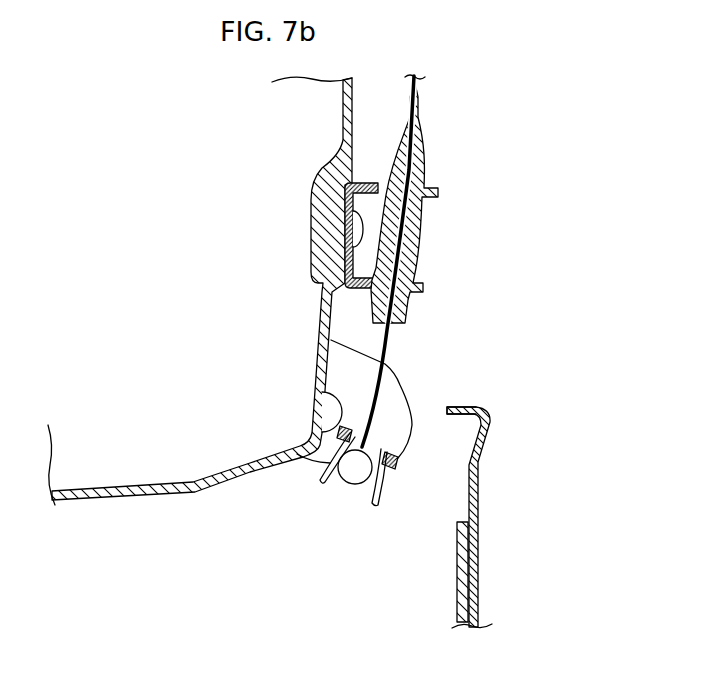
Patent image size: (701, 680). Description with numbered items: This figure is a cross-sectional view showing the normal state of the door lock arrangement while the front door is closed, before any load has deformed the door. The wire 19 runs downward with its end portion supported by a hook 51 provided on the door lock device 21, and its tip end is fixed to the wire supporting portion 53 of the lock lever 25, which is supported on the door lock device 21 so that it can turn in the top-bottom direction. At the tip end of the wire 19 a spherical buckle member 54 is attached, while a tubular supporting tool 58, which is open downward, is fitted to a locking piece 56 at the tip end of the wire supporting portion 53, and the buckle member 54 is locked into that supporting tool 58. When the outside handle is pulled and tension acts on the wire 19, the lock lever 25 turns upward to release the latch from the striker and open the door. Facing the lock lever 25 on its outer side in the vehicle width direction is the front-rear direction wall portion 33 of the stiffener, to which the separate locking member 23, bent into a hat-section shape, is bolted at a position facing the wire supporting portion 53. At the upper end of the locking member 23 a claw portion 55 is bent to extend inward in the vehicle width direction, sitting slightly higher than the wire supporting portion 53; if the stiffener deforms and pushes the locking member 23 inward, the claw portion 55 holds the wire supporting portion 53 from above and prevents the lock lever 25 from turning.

The wire 19 is at (390, 347).
The door lock device 21 is at (119, 507).
The locking member 23 is at (489, 497).
The lock lever 25 is at (405, 380).
The front-rear direction wall portion 33 is at (460, 578).
The hook 51 is at (438, 192).
The wire supporting portion 53 is at (406, 469).
The buckle member 54 is at (356, 483).
The claw portion 55 is at (470, 408).
The locking piece 56 is at (320, 424).
The supporting tool 58 is at (297, 454).